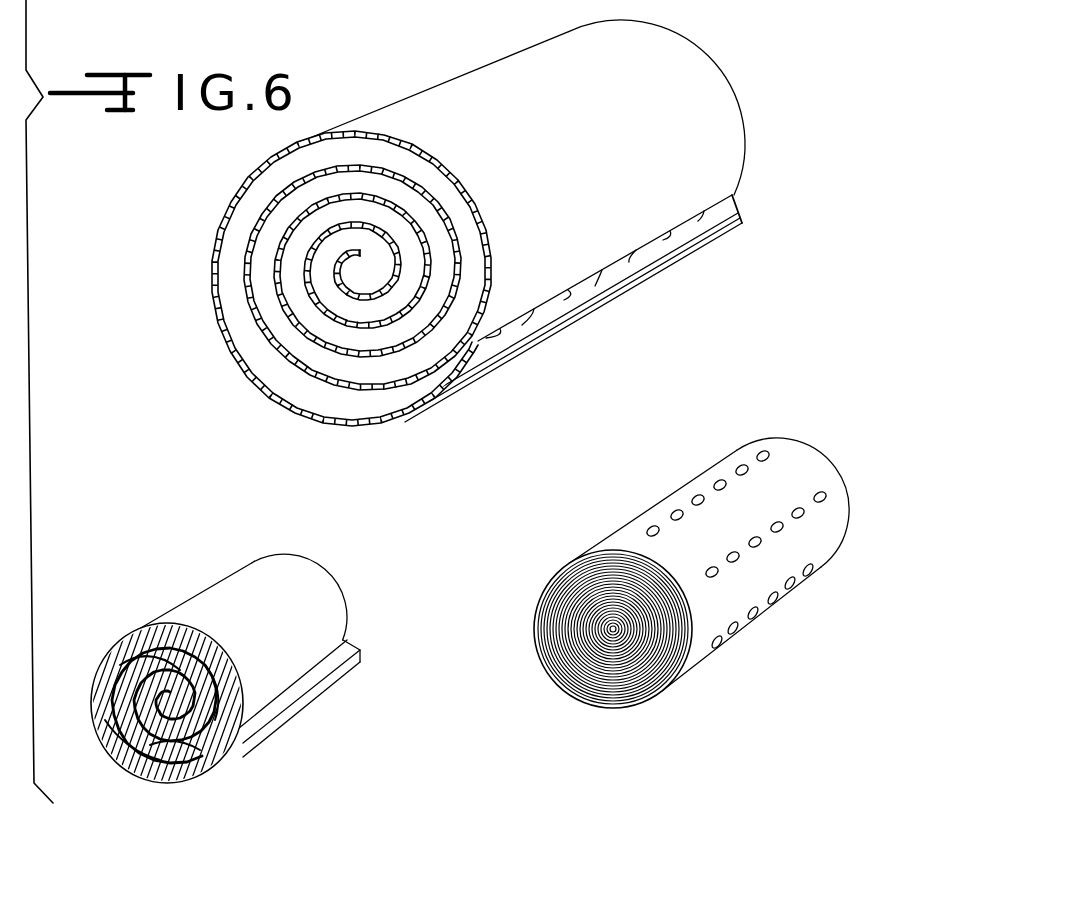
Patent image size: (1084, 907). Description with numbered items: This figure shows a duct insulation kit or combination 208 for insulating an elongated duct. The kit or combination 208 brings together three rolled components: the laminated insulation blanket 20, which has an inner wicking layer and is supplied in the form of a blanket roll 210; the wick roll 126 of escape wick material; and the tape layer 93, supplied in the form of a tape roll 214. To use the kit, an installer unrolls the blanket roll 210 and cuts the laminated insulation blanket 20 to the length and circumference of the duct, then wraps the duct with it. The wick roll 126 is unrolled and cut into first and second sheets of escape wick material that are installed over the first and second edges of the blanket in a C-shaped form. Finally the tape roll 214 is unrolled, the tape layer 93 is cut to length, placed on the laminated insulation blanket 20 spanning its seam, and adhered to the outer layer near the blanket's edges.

The laminated insulation blanket 20 is at (627, 173).
The blanket roll 210 is at (194, 249).
The wick roll 126 is at (179, 584).
The tape roll 214 is at (549, 546).
The tape layer 93 is at (798, 477).
The duct insulation kit or combination 208 is at (450, 761).